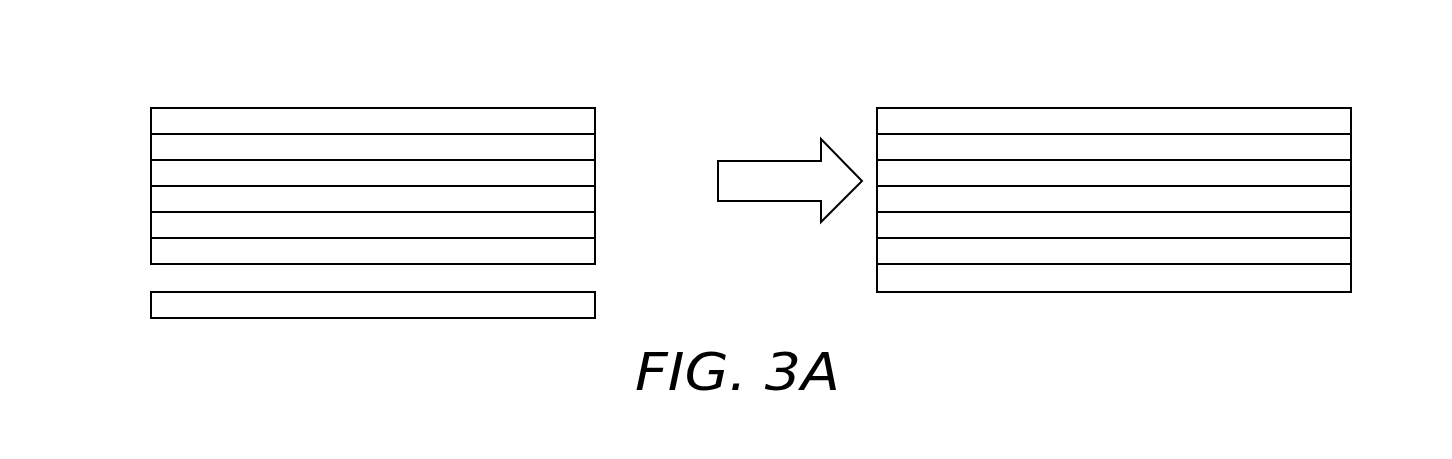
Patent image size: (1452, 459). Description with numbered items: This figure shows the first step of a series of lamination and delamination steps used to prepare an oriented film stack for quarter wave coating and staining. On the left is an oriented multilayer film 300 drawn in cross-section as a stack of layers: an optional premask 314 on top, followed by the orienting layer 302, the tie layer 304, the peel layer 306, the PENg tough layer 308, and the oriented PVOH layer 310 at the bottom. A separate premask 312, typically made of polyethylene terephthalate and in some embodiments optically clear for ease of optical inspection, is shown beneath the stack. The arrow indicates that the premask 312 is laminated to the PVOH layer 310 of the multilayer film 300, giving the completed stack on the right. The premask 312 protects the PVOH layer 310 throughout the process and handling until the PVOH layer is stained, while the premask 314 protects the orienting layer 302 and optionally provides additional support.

The oriented multilayer film 300 is at (165, 66).
The orienting layer 302 is at (580, 144).
The tie layer 304 is at (580, 170).
The peel layer 306 is at (580, 196).
The PENg tough layer 308 is at (580, 222).
The oriented PVOH layer 310 is at (580, 248).
The premask 312 is at (580, 302).
The premask 314 is at (580, 118).